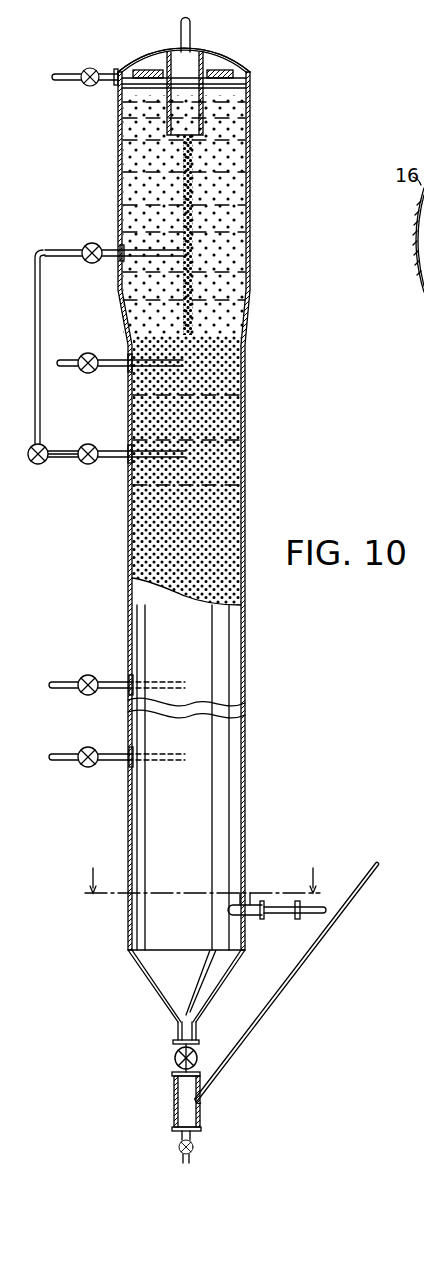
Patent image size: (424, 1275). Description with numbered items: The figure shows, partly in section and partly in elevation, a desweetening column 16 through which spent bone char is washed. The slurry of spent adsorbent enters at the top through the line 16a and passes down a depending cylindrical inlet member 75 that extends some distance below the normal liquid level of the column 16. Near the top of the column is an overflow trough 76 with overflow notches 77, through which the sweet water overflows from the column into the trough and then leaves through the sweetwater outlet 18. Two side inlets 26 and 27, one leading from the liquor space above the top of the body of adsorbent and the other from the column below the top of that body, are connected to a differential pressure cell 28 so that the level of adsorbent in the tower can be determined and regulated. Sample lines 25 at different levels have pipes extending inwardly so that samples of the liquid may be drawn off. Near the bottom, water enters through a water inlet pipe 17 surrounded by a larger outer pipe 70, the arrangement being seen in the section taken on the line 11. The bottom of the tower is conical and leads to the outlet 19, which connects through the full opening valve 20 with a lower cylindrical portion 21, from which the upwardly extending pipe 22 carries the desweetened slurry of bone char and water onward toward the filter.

The desweetening column 16 is at (245, 452).
The line 16a is at (181, 37).
The overflow trough 76 is at (238, 70).
The overflow notches 77 is at (210, 78).
The depending cylindrical inlet member 75 is at (203, 108).
The sweetwater outlet 18 is at (65, 79).
The side inlet 26 is at (80, 250).
The differential pressure cell 28 is at (34, 448).
The side inlet 27 is at (114, 448).
The sample lines 25 is at (106, 370).
The section line 11- 11 is at (207, 869).
The outer pipes 70 is at (253, 904).
The water inlet pipe 17 is at (312, 912).
The outlet 19 is at (178, 1036).
The full opening valve 20 is at (174, 1064).
The lower cylindrical portion 21 is at (178, 1098).
The upwardly extending pipe 22 is at (266, 1004).